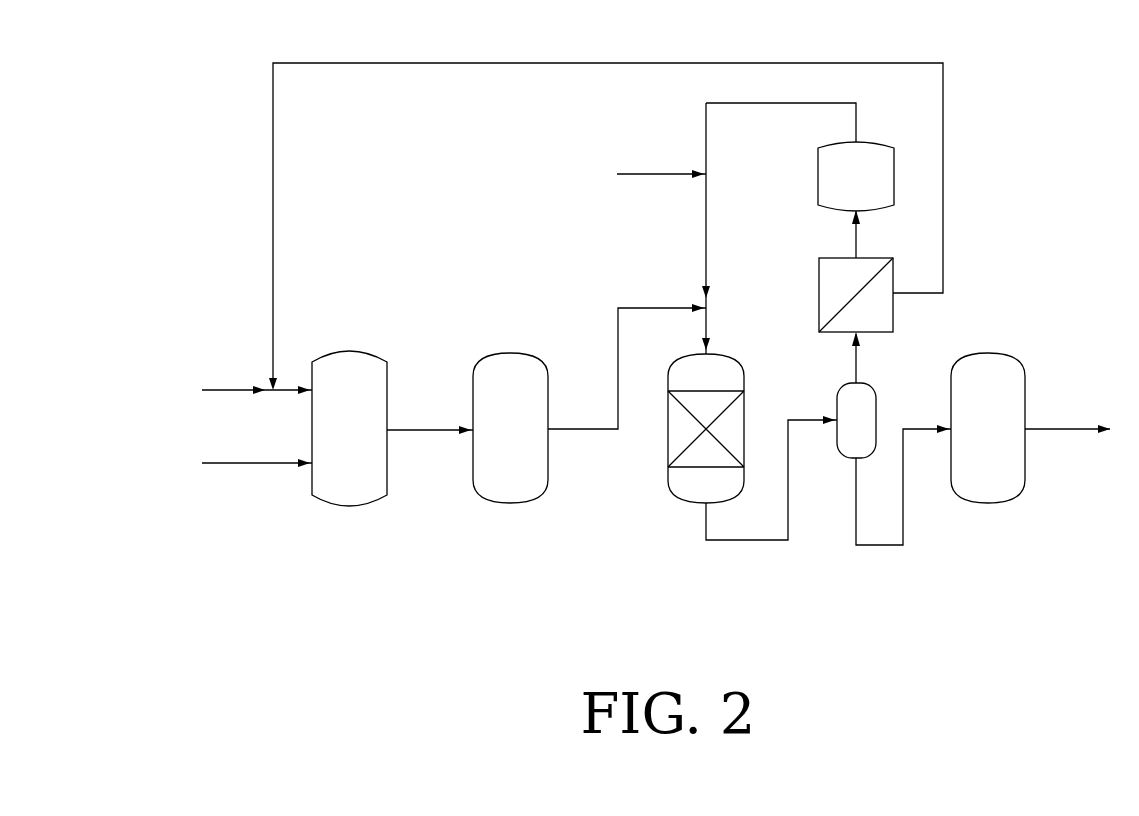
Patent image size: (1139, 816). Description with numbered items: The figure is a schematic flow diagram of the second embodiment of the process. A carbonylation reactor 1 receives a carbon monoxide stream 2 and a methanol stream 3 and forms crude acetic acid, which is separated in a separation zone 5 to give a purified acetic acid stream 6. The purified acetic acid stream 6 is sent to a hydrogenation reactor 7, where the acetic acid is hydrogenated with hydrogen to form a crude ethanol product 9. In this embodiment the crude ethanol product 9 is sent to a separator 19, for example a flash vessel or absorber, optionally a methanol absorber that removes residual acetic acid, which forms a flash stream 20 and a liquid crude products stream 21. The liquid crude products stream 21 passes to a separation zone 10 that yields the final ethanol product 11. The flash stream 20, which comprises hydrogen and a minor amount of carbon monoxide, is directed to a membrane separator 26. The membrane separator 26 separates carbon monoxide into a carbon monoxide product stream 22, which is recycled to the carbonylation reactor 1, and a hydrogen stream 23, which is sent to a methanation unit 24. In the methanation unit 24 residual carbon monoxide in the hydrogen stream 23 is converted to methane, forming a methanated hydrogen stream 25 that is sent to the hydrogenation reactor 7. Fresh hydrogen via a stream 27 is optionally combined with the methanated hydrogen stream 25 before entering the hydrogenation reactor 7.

The carbonylation reactor 1 is at (338, 442).
The carbon monoxide stream 2 is at (208, 392).
The methanol stream 3 is at (208, 465).
The separation zone 5 is at (499, 442).
The purified acetic acid stream 6 is at (567, 431).
The hydrogenation reactor 7 is at (672, 500).
The crude ethanol product 9 is at (740, 542).
The separation zone 10 is at (973, 442).
The final ethanol product 11 is at (1072, 430).
The separator 19 is at (843, 436).
The flash stream 20 is at (856, 362).
The liquid crude products stream 21 is at (856, 525).
The carbon monoxide product stream 22 is at (943, 187).
The hydrogen stream 23 is at (856, 240).
The methanation unit 24 is at (841, 192).
The methanated hydrogen stream 25 is at (706, 255).
The membrane separator 26 is at (893, 277).
The fresh hydrogen stream 27 is at (633, 172).